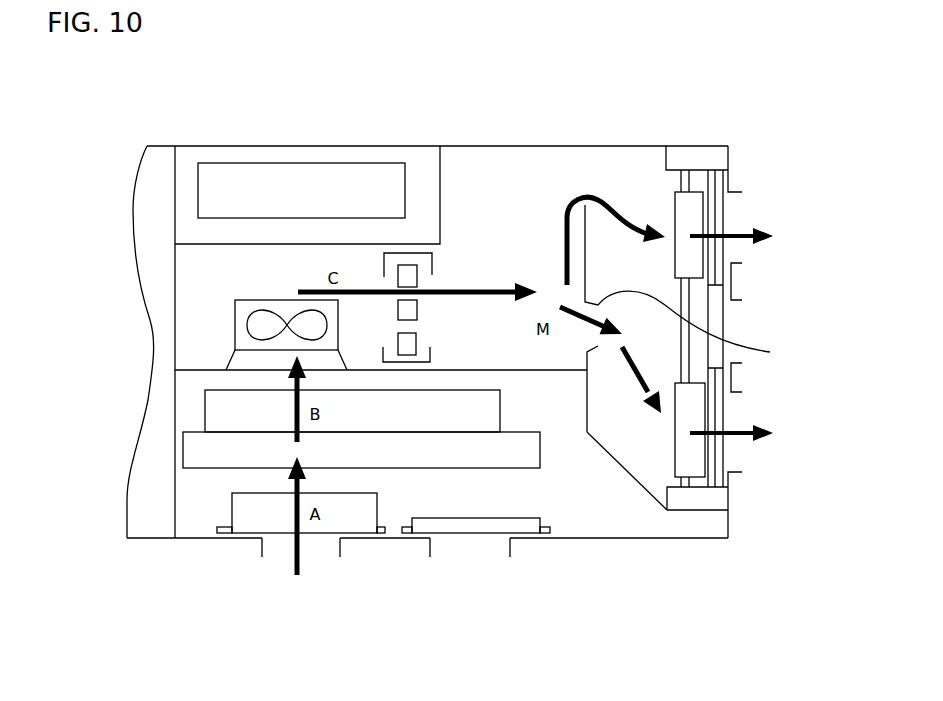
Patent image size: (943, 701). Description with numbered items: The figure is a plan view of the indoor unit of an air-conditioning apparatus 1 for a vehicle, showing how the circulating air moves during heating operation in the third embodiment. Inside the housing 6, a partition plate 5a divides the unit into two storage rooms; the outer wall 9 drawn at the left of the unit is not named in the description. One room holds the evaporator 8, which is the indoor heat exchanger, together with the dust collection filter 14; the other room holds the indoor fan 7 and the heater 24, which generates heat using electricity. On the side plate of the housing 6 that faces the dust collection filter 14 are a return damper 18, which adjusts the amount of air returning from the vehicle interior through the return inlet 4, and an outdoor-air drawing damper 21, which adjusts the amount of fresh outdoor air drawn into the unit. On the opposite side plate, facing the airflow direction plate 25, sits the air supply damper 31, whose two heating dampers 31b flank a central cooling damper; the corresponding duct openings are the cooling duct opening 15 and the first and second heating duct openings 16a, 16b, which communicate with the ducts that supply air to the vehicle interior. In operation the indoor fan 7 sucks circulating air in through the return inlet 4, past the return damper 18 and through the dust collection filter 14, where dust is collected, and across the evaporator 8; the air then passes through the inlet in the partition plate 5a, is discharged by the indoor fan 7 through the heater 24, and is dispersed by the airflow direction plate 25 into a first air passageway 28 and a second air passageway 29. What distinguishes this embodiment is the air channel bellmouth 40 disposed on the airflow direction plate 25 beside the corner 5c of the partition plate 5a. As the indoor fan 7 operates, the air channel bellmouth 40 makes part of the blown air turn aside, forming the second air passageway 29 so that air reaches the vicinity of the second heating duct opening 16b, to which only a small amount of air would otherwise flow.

The air-conditioning apparatus 1 is at (128, 146).
The return inlet 4 is at (312, 547).
The partition plate 5a is at (198, 368).
The corner 5c is at (585, 373).
The housing 6 is at (653, 146).
The indoor fan 7 is at (283, 307).
The evaporator 8 is at (220, 417).
The housing 9 is at (133, 215).
The dust collection filter 14 is at (190, 452).
The cooling duct opening 15 is at (738, 328).
The first heating duct opening 16a is at (737, 257).
The second heating duct opening 16b is at (742, 450).
The return damper 18 is at (257, 520).
The outdoor-air drawing damper 21 is at (478, 528).
The heater 24 is at (384, 258).
The airflow direction plate 25 is at (602, 210).
The first air passageway 28 is at (562, 217).
The second air passageway 29 is at (627, 380).
The air supply damper 31 is at (730, 158).
The heating damper 31b is at (693, 220).
The air channel bellmouth 40 is at (697, 329).